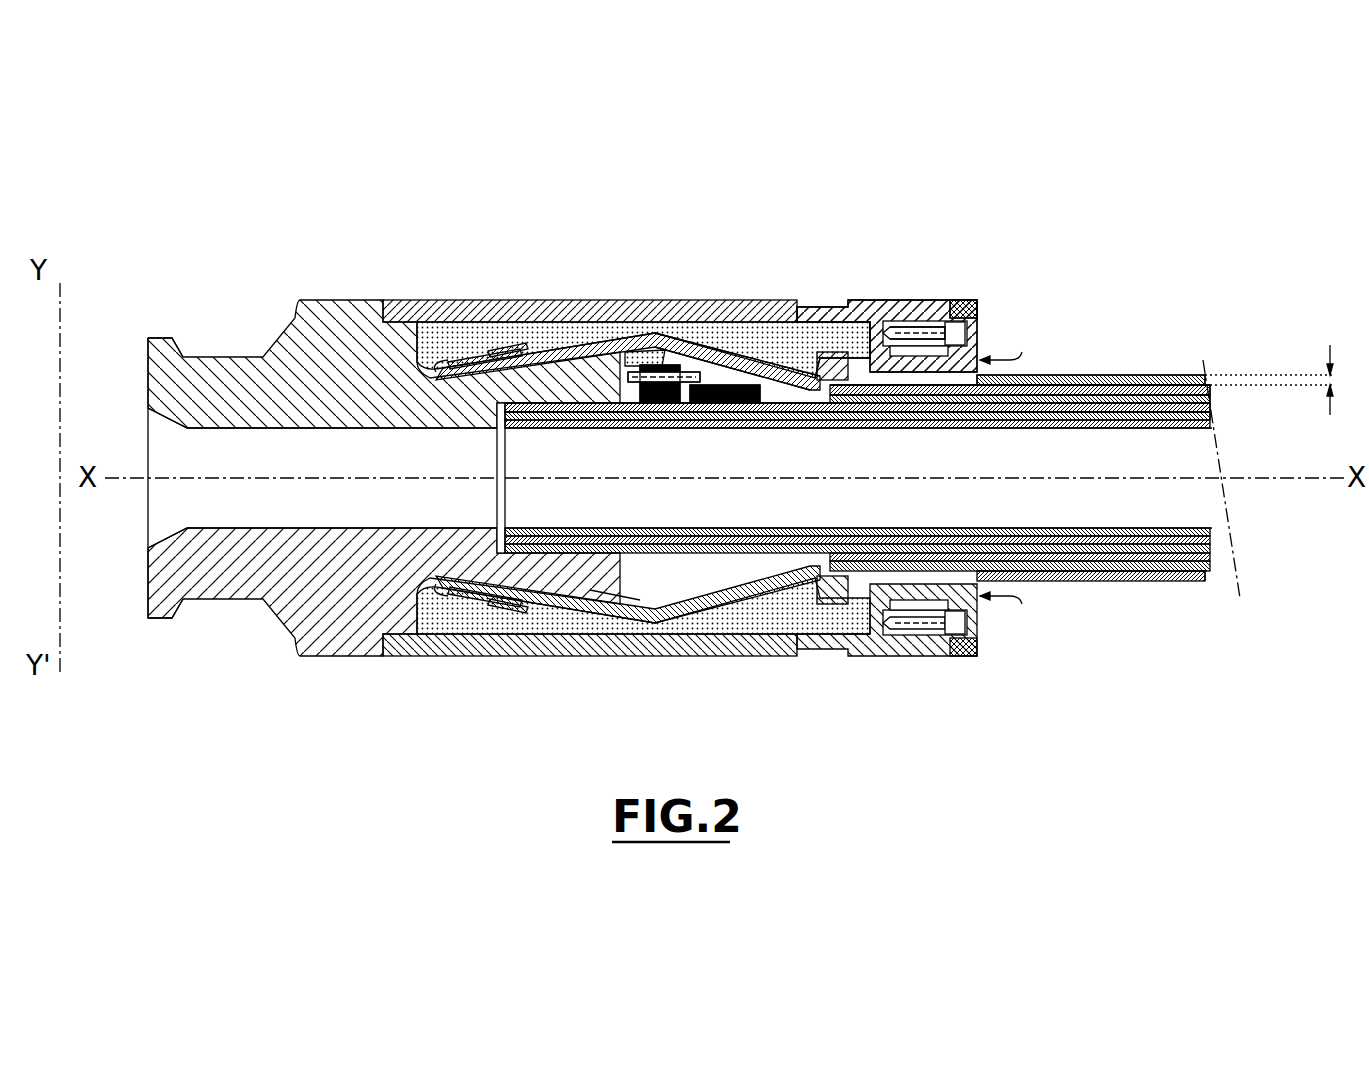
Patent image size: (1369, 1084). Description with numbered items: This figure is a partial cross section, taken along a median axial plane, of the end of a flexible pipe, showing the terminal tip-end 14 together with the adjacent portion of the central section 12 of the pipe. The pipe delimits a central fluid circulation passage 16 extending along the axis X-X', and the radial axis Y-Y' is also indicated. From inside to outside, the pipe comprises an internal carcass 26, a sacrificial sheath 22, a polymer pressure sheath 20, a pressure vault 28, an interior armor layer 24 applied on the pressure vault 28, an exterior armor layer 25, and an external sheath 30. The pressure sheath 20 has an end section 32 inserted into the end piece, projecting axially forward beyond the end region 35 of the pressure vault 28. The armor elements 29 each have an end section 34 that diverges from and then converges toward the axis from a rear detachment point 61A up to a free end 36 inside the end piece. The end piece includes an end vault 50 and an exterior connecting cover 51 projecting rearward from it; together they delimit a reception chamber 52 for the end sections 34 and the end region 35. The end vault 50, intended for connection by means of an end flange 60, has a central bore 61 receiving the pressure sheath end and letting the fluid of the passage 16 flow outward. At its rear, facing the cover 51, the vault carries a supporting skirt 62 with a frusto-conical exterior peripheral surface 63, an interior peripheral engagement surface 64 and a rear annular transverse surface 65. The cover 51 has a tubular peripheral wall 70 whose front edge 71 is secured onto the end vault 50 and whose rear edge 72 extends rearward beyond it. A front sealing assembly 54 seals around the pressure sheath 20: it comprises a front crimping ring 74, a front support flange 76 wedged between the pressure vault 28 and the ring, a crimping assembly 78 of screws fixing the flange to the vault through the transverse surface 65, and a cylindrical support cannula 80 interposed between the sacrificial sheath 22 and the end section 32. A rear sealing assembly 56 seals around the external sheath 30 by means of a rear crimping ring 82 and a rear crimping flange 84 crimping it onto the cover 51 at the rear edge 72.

The central section 12 is at (1236, 616).
The terminal tip-end 14 is at (900, 257).
The central fluid circulation passage 16 is at (858, 478).
The first tubular sheath 20 is at (1217, 408).
The sacrificial sheath 22 is at (1219, 417).
The interior armor layer 24 is at (1215, 389).
The exterior armor layer 25 is at (1212, 378).
The internal carcass 26 is at (1192, 530).
The pressure vault 28 is at (1215, 398).
The armor elements 29 is at (565, 352).
The external sheath 30 is at (1190, 372).
The end section of the pressure sheath 32 is at (768, 428).
The end section of the armor elements 34 is at (740, 355).
The end region of the pressure vault 35 is at (760, 350).
The free end 36 is at (500, 335).
The end vault 50 is at (330, 300).
The exterior connecting cover 51 is at (611, 258).
The reception chamber 52 is at (538, 345).
The front sealing assembly 54 is at (595, 413).
The rear sealing assembly 56 is at (860, 312).
The end flange 60 is at (160, 338).
The central bore 61 is at (342, 478).
The rear detachment point 61A is at (808, 425).
The supporting skirt 62 is at (567, 565).
The exterior peripheral surface 63 is at (480, 600).
The interior peripheral engagement surface 64 is at (612, 585).
The rear annular transverse surface 65 is at (648, 350).
The tubular peripheral wall 70 is at (678, 338).
The front edge 71 is at (368, 310).
The rear edge 72 is at (962, 305).
The front crimping ring 74 is at (604, 422).
The front support flange 76 is at (660, 428).
The crimping assembly 78 is at (706, 428).
The cylindrical support cannula 80 is at (928, 400).
The rear crimping ring 82 is at (920, 326).
The rear crimping flange 84 is at (1005, 428).